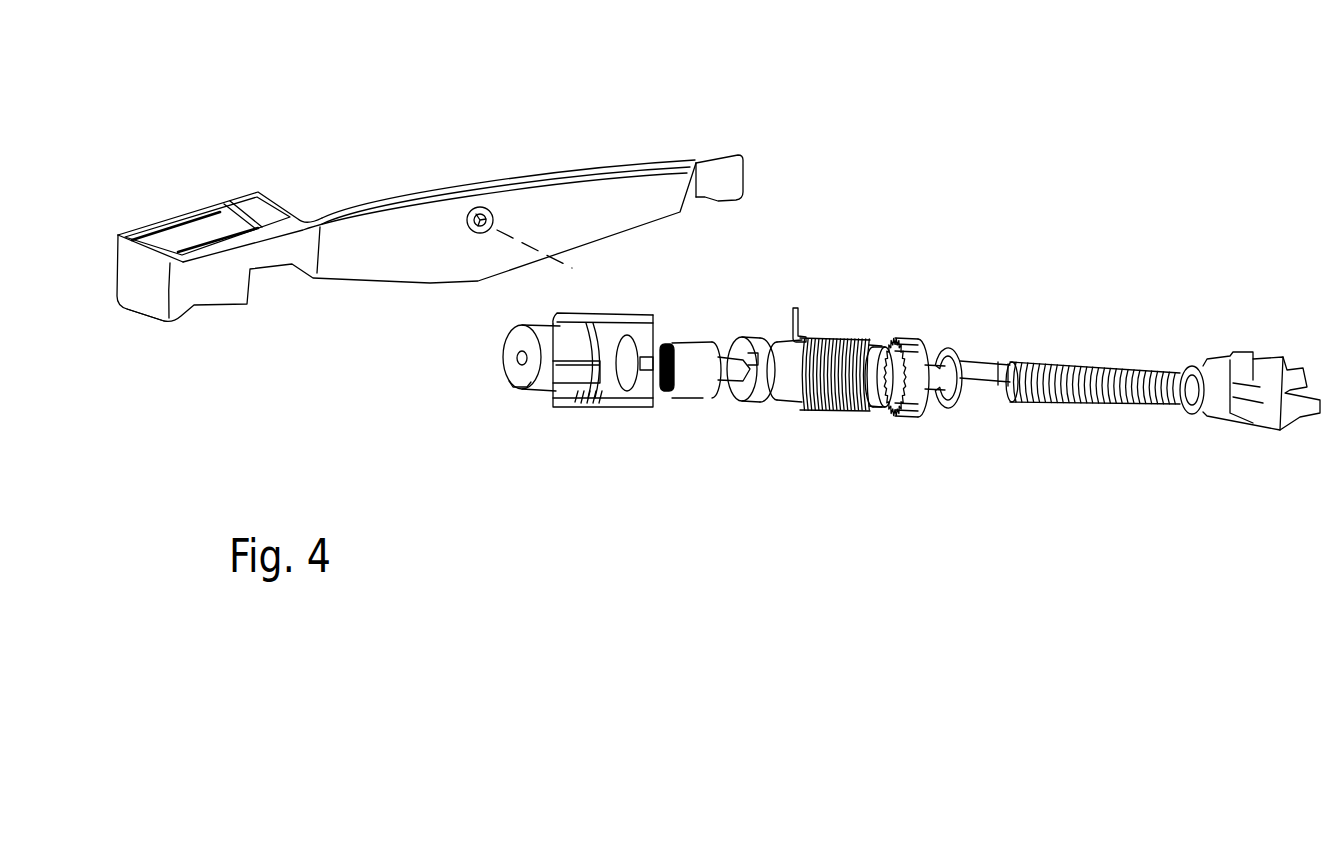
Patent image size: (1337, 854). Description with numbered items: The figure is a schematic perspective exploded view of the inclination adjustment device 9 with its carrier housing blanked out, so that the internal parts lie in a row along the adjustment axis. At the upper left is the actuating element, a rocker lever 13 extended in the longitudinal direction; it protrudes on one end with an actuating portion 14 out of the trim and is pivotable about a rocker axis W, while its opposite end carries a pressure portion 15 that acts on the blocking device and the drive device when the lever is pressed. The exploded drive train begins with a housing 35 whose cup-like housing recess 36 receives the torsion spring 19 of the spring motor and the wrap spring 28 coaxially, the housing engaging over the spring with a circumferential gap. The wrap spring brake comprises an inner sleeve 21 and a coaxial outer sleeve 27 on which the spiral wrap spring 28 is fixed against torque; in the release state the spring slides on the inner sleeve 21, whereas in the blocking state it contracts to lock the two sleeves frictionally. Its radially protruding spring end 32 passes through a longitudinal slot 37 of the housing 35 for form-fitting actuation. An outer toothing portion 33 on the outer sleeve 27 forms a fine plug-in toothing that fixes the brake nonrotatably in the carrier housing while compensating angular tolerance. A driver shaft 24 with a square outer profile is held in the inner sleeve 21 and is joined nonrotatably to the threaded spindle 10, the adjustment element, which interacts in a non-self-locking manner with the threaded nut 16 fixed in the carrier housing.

The inclination adjustment device 9 is at (804, 79).
The threaded spindle 10 is at (1088, 360).
The rocker lever 13 is at (363, 147).
The actuating portion 14 is at (212, 304).
The pressure portion 15 is at (717, 197).
The threaded nut 16 is at (1212, 410).
The torsion spring 19 is at (700, 387).
The inner sleeve 21 is at (782, 388).
The driver shaft 24 is at (733, 381).
The outer sleeve 27 is at (888, 412).
The wrap spring 28 is at (839, 338).
The spring end 32 is at (795, 306).
The toothing portion 33 is at (917, 416).
The housing 35 is at (546, 393).
The housing recess 36 is at (659, 324).
The longitudinal slot 37 is at (621, 312).
The rocker axis W is at (560, 262).